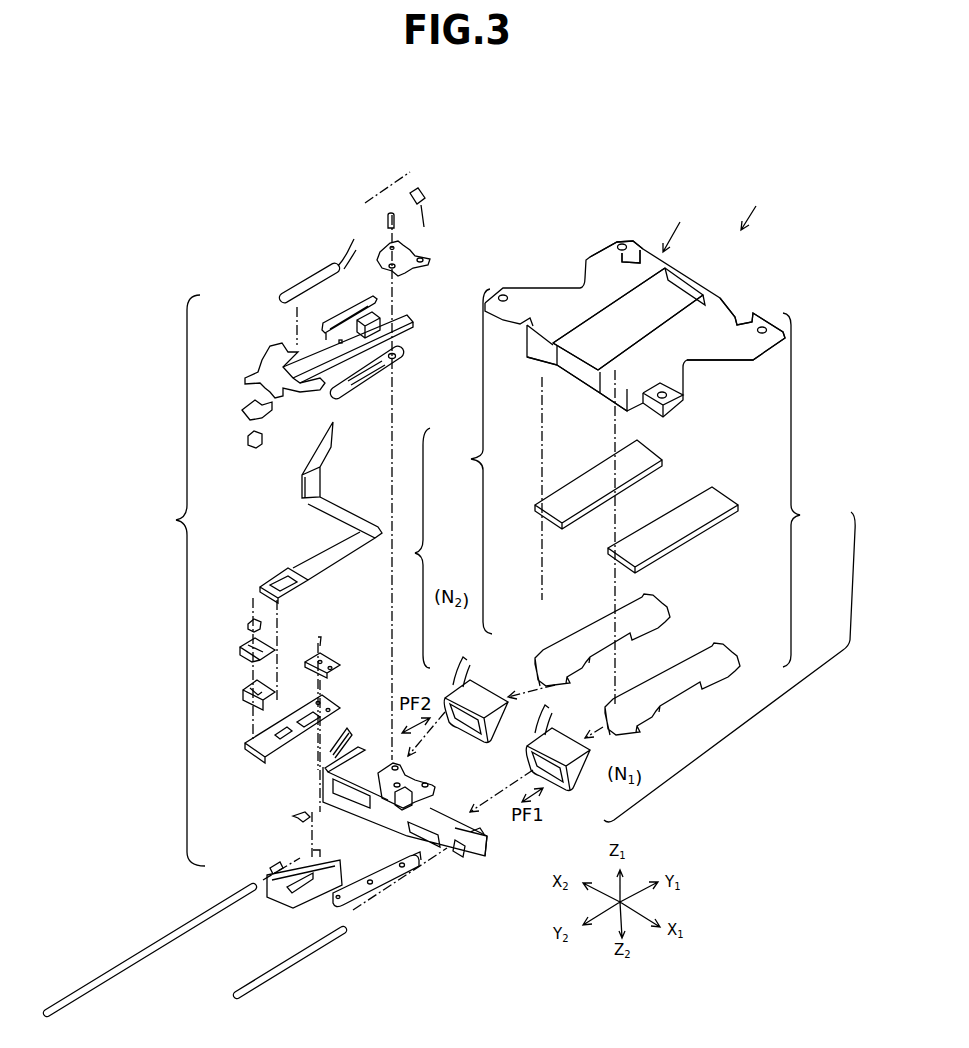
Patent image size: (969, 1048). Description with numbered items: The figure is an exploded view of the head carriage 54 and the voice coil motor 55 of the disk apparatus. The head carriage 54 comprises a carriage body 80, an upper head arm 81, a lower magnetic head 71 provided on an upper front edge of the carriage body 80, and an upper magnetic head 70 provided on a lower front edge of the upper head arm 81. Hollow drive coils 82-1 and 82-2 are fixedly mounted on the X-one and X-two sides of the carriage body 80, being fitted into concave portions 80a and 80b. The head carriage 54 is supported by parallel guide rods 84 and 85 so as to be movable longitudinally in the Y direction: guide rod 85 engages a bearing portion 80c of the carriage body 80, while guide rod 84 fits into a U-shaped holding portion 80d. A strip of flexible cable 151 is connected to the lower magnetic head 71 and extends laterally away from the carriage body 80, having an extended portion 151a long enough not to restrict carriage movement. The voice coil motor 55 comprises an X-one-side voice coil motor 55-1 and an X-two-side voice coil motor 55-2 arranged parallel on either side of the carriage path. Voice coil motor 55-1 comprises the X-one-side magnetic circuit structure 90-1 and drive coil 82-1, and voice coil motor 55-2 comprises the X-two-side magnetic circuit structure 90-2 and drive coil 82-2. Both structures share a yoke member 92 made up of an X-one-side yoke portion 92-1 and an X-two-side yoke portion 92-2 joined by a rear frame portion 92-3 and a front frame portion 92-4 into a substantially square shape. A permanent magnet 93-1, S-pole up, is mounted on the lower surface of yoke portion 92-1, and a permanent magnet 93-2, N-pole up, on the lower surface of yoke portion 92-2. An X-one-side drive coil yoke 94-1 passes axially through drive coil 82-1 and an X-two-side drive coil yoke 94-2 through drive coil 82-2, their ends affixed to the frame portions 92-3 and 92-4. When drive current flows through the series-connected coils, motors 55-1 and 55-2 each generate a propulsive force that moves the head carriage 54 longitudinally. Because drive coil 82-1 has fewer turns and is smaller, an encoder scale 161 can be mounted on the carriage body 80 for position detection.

The head carriage 54 is at (167, 580).
The voice coil motor 55 is at (757, 205).
The X1-side voice coil motor 55-1 is at (729, 667).
The X2-side voice coil motor 55-2 is at (400, 548).
The upper magnetic head 70 is at (250, 447).
The lower magnetic head 71 is at (247, 622).
The carriage body 80 is at (362, 808).
The concave portion 80a is at (440, 813).
The concave portion 80b is at (363, 760).
The bearing portion 80c is at (268, 875).
The U-shaped holding portion 80d is at (465, 860).
The upper head arm 81 is at (410, 330).
The drive coil 82-1 is at (570, 767).
The drive coil 82-2 is at (460, 682).
The guide rod 84 is at (307, 953).
The guide rod 85 is at (160, 935).
The X1-side magnetic circuit structure 90-1 is at (815, 490).
The X2-side magnetic circuit structure 90-2 is at (462, 461).
The yoke member 92 is at (635, 319).
The X1-side yoke portion 92-1 is at (725, 343).
The X2-side yoke portion 92-2 is at (600, 262).
The rear Y2-edge frame portion 92-3 is at (580, 392).
The front Y1-edge frame portion 92-4 is at (688, 293).
The permanent magnet 93-1 is at (698, 520).
The permanent magnet 93-2 is at (560, 485).
The X1-side drive coil yoke 94-1 is at (690, 683).
The X2-side drive coil yoke 94-2 is at (597, 620).
The strip of flexible cable 151 is at (322, 553).
The extended portion 151a is at (331, 447).
The encoder scale 161 is at (372, 893).